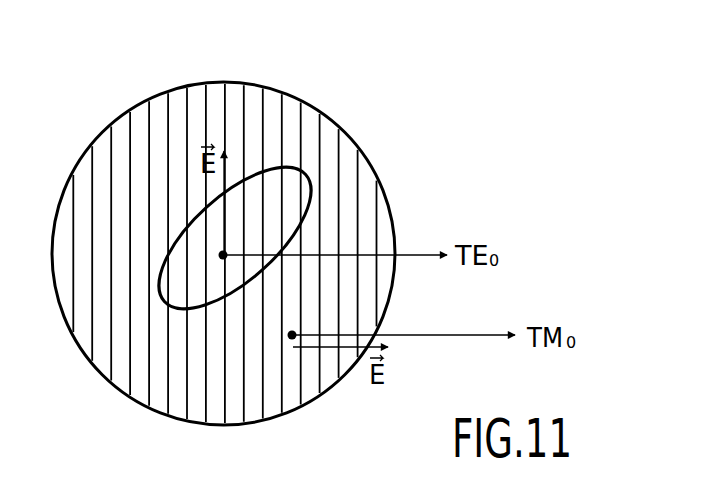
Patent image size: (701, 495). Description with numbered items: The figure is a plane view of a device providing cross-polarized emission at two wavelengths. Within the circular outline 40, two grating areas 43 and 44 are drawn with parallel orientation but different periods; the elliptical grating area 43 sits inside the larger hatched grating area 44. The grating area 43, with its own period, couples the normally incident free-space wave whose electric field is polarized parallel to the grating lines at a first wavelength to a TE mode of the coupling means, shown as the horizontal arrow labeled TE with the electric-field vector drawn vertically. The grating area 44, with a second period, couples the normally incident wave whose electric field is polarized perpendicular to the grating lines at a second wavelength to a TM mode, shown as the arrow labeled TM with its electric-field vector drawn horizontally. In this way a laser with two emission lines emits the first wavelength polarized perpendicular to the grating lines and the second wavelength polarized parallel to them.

The optical fiber cross-section 40 is at (392, 181).
The grating area 43 is at (277, 188).
The grating area 44 is at (254, 134).